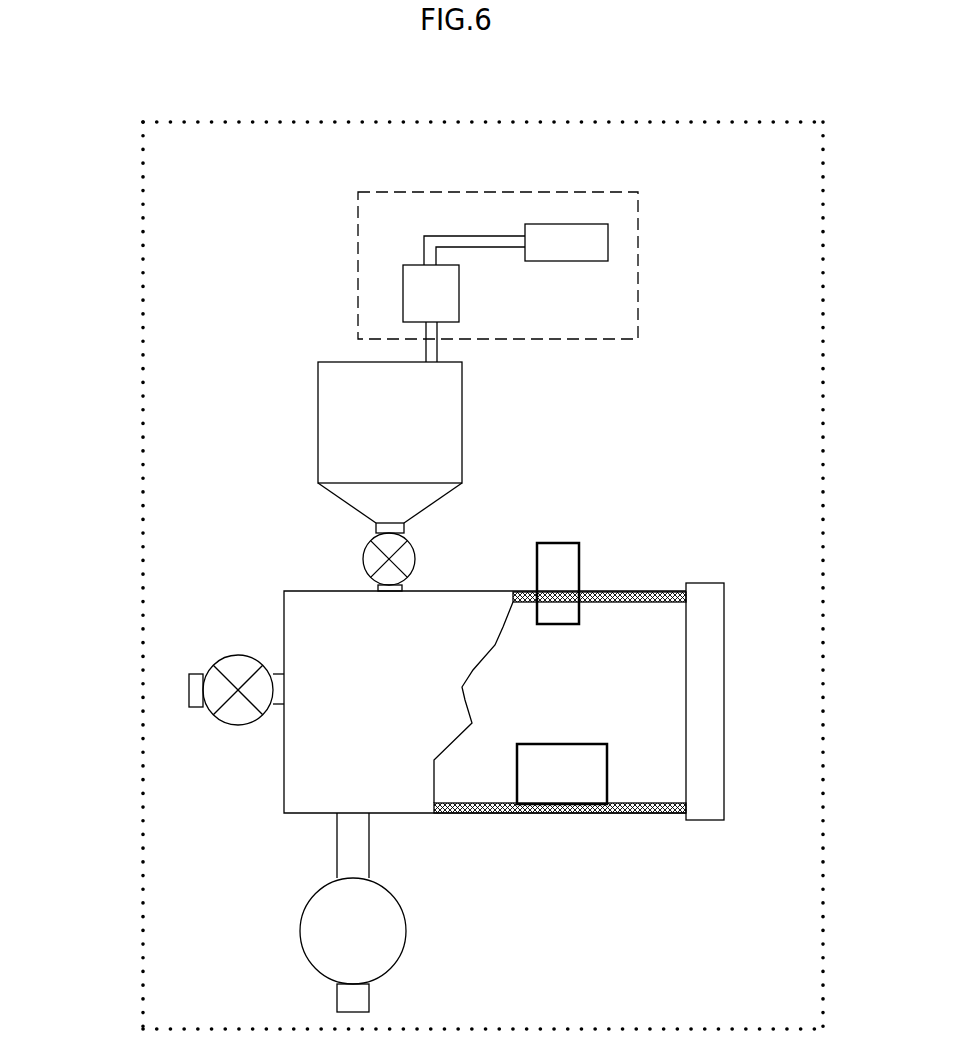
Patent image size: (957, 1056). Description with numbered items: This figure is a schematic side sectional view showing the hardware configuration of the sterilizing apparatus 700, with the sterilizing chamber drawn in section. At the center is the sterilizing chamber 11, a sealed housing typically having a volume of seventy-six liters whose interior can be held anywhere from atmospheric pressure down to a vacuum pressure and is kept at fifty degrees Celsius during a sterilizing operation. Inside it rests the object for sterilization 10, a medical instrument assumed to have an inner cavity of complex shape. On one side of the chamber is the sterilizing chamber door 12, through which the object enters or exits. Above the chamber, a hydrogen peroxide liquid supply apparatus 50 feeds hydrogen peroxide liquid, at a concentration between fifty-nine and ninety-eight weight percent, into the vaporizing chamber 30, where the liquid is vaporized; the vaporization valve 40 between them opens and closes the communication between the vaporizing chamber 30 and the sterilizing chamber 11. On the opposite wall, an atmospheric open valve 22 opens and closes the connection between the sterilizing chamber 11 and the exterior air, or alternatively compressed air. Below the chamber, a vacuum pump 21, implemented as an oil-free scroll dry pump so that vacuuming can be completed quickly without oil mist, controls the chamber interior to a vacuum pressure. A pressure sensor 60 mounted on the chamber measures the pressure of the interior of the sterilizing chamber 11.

The sterilizing apparatus 700 is at (141, 528).
The hydrogen peroxide liquid supply apparatus 50 is at (358, 222).
The vaporizing chamber 30 is at (465, 412).
The vaporization valve 40 is at (425, 547).
The atmospheric open valve 22 is at (222, 645).
The vacuum pump 21 is at (425, 935).
The pressure sensor 60 is at (558, 583).
The object for sterilization 10 is at (562, 774).
The sterilizing chamber 11 is at (643, 590).
The sterilizing chamber door 12 is at (728, 583).